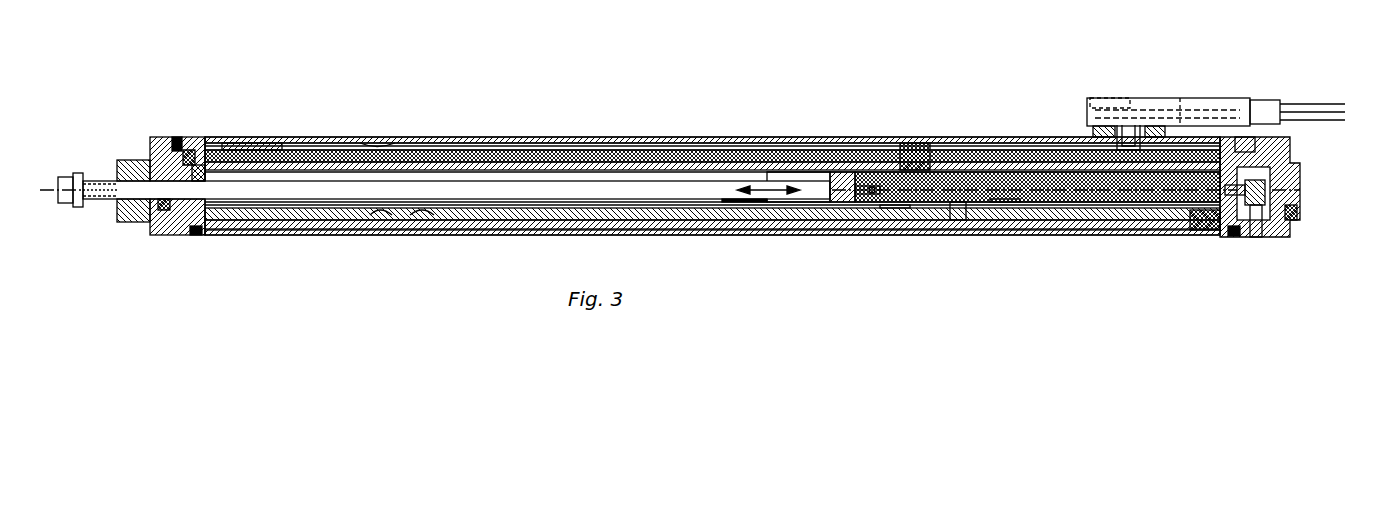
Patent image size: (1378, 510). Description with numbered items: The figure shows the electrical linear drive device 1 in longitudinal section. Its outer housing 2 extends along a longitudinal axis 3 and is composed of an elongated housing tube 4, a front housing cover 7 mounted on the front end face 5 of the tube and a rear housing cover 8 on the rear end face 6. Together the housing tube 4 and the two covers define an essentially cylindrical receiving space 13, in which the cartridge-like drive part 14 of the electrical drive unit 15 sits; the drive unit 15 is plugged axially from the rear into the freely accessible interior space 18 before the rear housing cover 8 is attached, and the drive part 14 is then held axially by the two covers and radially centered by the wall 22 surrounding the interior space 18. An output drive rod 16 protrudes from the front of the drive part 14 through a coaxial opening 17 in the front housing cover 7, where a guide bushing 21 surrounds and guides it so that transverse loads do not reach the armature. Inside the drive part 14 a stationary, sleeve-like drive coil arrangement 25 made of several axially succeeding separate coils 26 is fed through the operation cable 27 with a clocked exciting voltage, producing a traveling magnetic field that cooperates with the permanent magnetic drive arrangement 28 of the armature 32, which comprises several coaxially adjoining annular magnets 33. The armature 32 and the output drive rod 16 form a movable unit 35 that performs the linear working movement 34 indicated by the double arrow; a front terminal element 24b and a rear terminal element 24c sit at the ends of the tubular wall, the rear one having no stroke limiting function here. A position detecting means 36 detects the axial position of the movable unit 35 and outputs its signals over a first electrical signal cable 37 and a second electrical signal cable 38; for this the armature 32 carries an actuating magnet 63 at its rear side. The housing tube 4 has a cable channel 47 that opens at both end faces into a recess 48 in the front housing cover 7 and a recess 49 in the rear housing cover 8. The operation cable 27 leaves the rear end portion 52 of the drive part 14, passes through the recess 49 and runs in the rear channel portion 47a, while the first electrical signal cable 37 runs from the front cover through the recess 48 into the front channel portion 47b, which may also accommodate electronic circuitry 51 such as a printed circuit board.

The electrical linear drive device 1 is at (975, 112).
The outer housing 2 is at (1114, 236).
The longitudinal axis 3 is at (327, 236).
The housing tube 4 is at (483, 235).
The front end face 5 is at (200, 236).
The rear end face 6 is at (1226, 239).
The front housing cover 7 is at (183, 236).
The rear housing cover 8 is at (1262, 120).
The receiving space 13 is at (380, 222).
The drive part 14 is at (843, 149).
The electrical drive unit 15 is at (668, 180).
The output drive rod 16 is at (443, 188).
The coaxial opening 17 is at (168, 236).
The interior space 18 is at (422, 216).
The guide bushing 21 is at (148, 166).
The wall 22 is at (910, 237).
The front terminal element 24b is at (222, 236).
The rear terminal element 24c is at (1233, 238).
The drive coil arrangement 25 is at (705, 166).
The separate coils 26 is at (496, 160).
The operation cable 27 is at (1244, 165).
The permanent magnetic drive arrangement 28 is at (1005, 222).
The armature 32 is at (958, 221).
The annular magnets 33 is at (925, 156).
The linear working movement 34 is at (770, 185).
The movable unit 35 is at (723, 195).
The position detecting means 36 is at (185, 148).
The first electrical signal cable 37 is at (198, 150).
The second electrical signal cable 38 is at (1172, 134).
The cable channel 47 is at (615, 141).
The rear channel portion 47a is at (1140, 140).
The front channel portion 47b is at (377, 143).
The recess 48 is at (176, 138).
The recess 49 is at (1248, 140).
The electronic circuitry 51 is at (262, 141).
The rear end portion 52 is at (1196, 237).
The actuating magnet 63 is at (1252, 240).